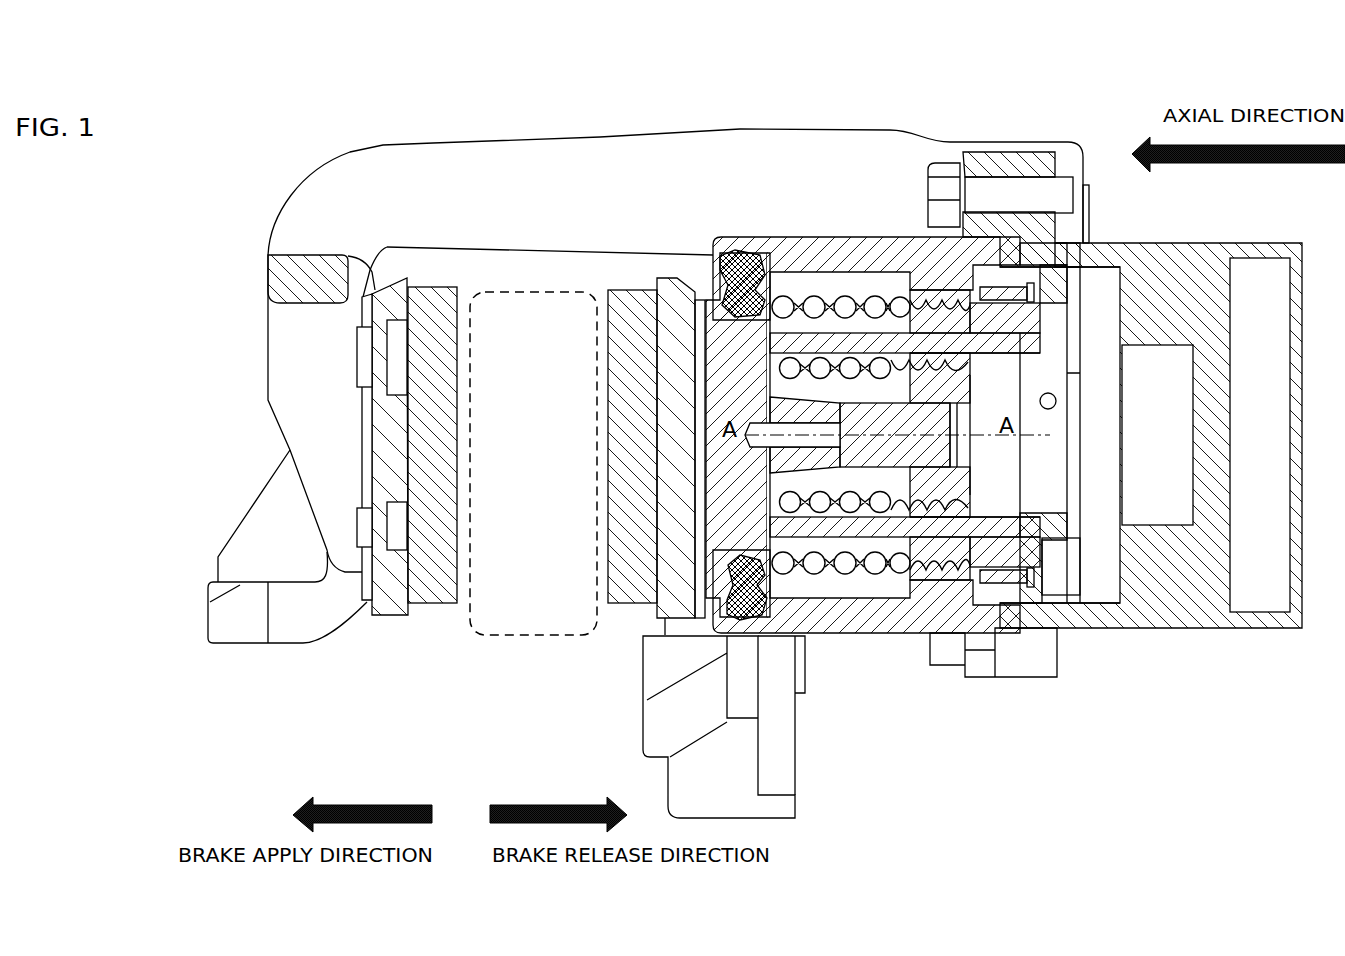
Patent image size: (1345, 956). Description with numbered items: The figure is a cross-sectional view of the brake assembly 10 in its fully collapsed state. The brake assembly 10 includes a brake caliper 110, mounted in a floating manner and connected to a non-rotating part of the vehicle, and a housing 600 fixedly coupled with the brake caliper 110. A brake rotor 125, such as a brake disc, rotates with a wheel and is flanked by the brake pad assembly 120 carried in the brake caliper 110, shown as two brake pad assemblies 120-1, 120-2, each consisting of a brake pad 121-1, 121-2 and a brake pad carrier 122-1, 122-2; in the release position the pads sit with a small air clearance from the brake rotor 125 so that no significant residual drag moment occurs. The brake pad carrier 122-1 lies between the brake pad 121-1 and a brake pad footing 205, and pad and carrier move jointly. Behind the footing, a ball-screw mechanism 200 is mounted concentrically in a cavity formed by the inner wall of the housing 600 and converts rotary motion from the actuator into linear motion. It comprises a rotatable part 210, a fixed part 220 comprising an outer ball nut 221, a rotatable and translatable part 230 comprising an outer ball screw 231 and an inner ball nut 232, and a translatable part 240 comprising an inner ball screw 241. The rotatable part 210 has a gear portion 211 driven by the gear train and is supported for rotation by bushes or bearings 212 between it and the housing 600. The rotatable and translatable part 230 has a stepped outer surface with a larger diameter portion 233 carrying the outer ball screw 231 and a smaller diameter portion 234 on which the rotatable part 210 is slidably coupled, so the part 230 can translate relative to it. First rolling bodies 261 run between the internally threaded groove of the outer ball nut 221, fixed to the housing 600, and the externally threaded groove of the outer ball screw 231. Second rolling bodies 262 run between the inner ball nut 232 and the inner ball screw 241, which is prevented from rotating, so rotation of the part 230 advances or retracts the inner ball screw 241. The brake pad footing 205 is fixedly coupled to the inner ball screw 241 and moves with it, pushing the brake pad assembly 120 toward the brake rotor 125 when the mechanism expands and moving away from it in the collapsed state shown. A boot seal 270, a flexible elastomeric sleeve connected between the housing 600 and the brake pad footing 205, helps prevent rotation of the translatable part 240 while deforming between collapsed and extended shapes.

The brake assembly 10 is at (280, 105).
The brake caliper 110 is at (308, 227).
The brake pad assembly 120 is at (620, 632).
The brake pad assembly 120-1 is at (626, 336).
The brake pad assembly 120-2 is at (446, 332).
The brake pad 121-1 is at (635, 300).
The brake pad 121-2 is at (438, 300).
The brake pad carrier 122-1 is at (676, 300).
The brake pad carrier 122-2 is at (381, 300).
The brake rotor 125 is at (505, 618).
The ball-screw mechanism 200 is at (1047, 426).
The brake pad footing 205 is at (755, 520).
The rotatable part 210 is at (1045, 318).
The gear portion 211 is at (1060, 630).
The bushes or bearings 212 is at (1013, 287).
The fixed part 220 is at (876, 354).
The outer ball nut 221 is at (890, 312).
The rotatable and translatable part 230 is at (890, 317).
The outer ball screw 231 is at (920, 325).
The inner ball nut 232 is at (955, 345).
The larger diameter portion 233 is at (953, 575).
The smaller diameter portion 234 is at (1013, 553).
The translatable part 240 is at (776, 535).
The inner ball screw 241 is at (837, 505).
The first rolling bodies 261 is at (862, 300).
The second rolling bodies 262 is at (792, 490).
The boot seal 270 is at (740, 262).
The housing 600 is at (1148, 270).